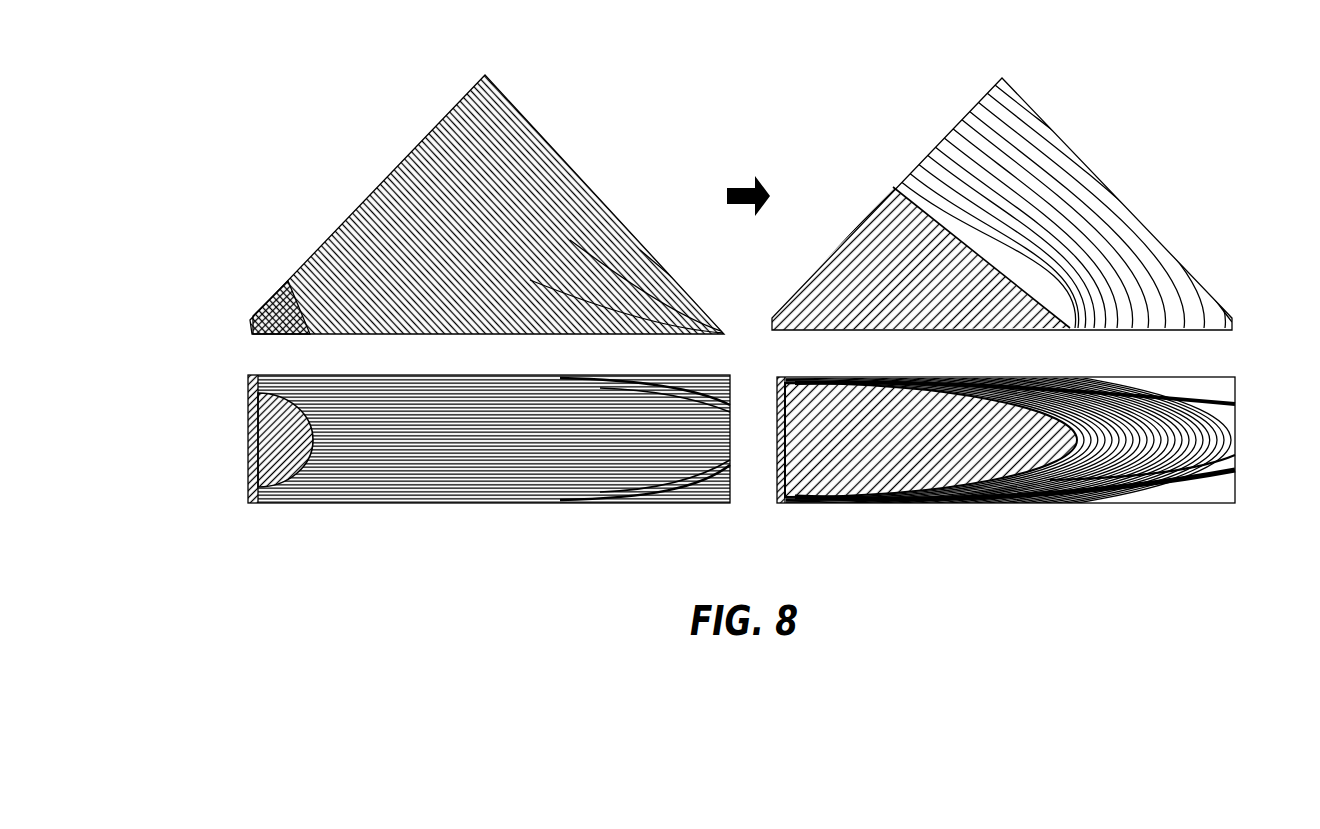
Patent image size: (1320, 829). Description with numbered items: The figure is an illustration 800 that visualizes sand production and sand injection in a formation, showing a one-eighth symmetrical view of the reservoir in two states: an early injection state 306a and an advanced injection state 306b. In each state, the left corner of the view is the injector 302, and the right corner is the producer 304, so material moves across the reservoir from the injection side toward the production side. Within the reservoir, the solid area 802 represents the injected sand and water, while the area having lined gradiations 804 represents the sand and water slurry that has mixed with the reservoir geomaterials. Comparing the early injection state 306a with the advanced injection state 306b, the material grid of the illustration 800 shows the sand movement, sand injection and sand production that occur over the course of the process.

The illustration 800 is at (380, 68).
The injector 302 is at (248, 377).
The producer 304 is at (732, 398).
The early injection state 306a is at (351, 221).
The advanced injection state 306b is at (923, 167).
The solid area 802 is at (274, 306).
The area having lined gradiations 804 is at (564, 165).